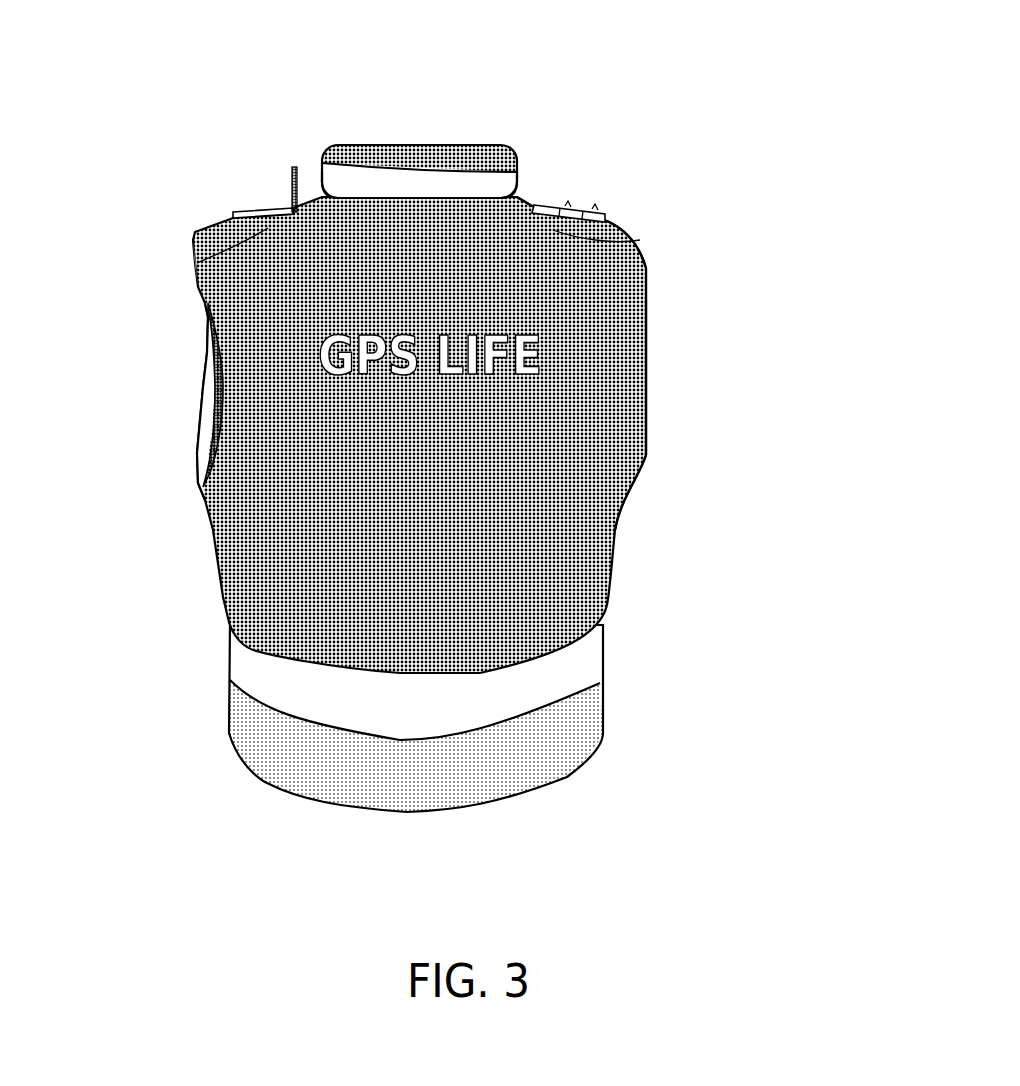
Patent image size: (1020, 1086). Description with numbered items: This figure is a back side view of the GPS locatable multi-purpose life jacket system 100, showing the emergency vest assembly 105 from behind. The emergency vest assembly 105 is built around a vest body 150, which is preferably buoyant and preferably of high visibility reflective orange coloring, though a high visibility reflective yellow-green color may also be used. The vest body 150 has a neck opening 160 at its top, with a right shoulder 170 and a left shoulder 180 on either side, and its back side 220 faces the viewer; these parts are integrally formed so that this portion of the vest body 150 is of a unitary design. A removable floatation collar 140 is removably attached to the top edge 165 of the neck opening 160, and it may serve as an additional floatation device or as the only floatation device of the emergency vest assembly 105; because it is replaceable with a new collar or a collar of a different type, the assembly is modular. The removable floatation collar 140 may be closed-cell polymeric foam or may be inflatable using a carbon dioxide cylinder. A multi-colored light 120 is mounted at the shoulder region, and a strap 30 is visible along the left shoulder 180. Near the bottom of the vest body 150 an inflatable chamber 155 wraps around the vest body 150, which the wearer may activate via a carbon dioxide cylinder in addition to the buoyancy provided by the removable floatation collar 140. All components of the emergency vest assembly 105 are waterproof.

The personal flotation tracking system 100 is at (613, 53).
The emergency vest assembly 105 is at (653, 92).
The neck opening 160 is at (408, 130).
The removable floatation collar 140 is at (350, 180).
The left shoulder strap 30 is at (262, 211).
The left shoulder 180 is at (195, 263).
The top edge 165 is at (513, 198).
The multi-colored light 120 is at (602, 212).
The right shoulder 170 is at (640, 240).
The vest body 150 is at (570, 290).
The back side 220 is at (573, 397).
The inflatable chamber 155 is at (577, 670).